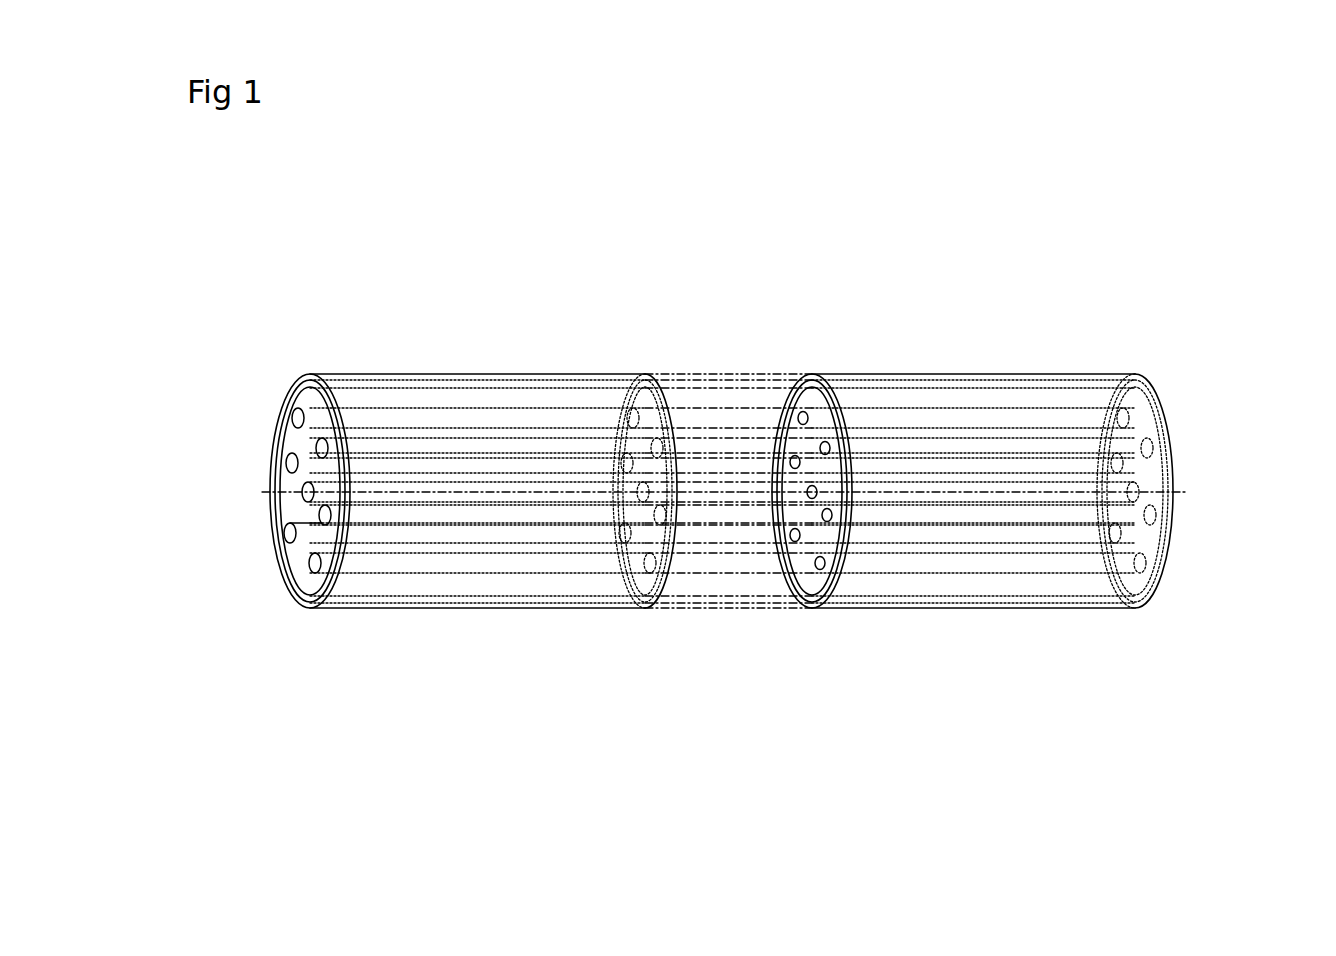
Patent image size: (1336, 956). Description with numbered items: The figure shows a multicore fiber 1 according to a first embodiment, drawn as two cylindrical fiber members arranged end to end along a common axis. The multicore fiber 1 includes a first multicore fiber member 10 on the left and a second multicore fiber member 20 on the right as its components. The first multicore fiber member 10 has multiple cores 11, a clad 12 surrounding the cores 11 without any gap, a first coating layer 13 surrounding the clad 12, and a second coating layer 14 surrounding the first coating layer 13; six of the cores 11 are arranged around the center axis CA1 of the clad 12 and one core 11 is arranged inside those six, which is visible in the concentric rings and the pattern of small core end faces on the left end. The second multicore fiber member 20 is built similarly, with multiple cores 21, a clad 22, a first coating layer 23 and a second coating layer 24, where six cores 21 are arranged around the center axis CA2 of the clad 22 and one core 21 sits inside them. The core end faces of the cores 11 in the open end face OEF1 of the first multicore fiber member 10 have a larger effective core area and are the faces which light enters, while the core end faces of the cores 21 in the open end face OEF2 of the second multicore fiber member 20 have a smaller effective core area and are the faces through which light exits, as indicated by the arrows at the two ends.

The multicore fiber 1 is at (755, 268).
The first multicore fiber member 10 is at (470, 374).
The cores 11 is at (298, 408).
The clad 12 is at (305, 588).
The first coating layer 13 is at (322, 580).
The second coating layer 14 is at (312, 609).
The second multicore fiber member 20 is at (975, 374).
The cores 21 is at (1148, 400).
The clad 22 is at (1155, 592).
The first coating layer 23 is at (1102, 588).
The second coating layer 24 is at (1112, 609).
The center axis CA1 is at (262, 492).
The center axis CA2 is at (1187, 492).
The open end face OEF1 is at (255, 507).
The open end face OEF2 is at (1190, 507).